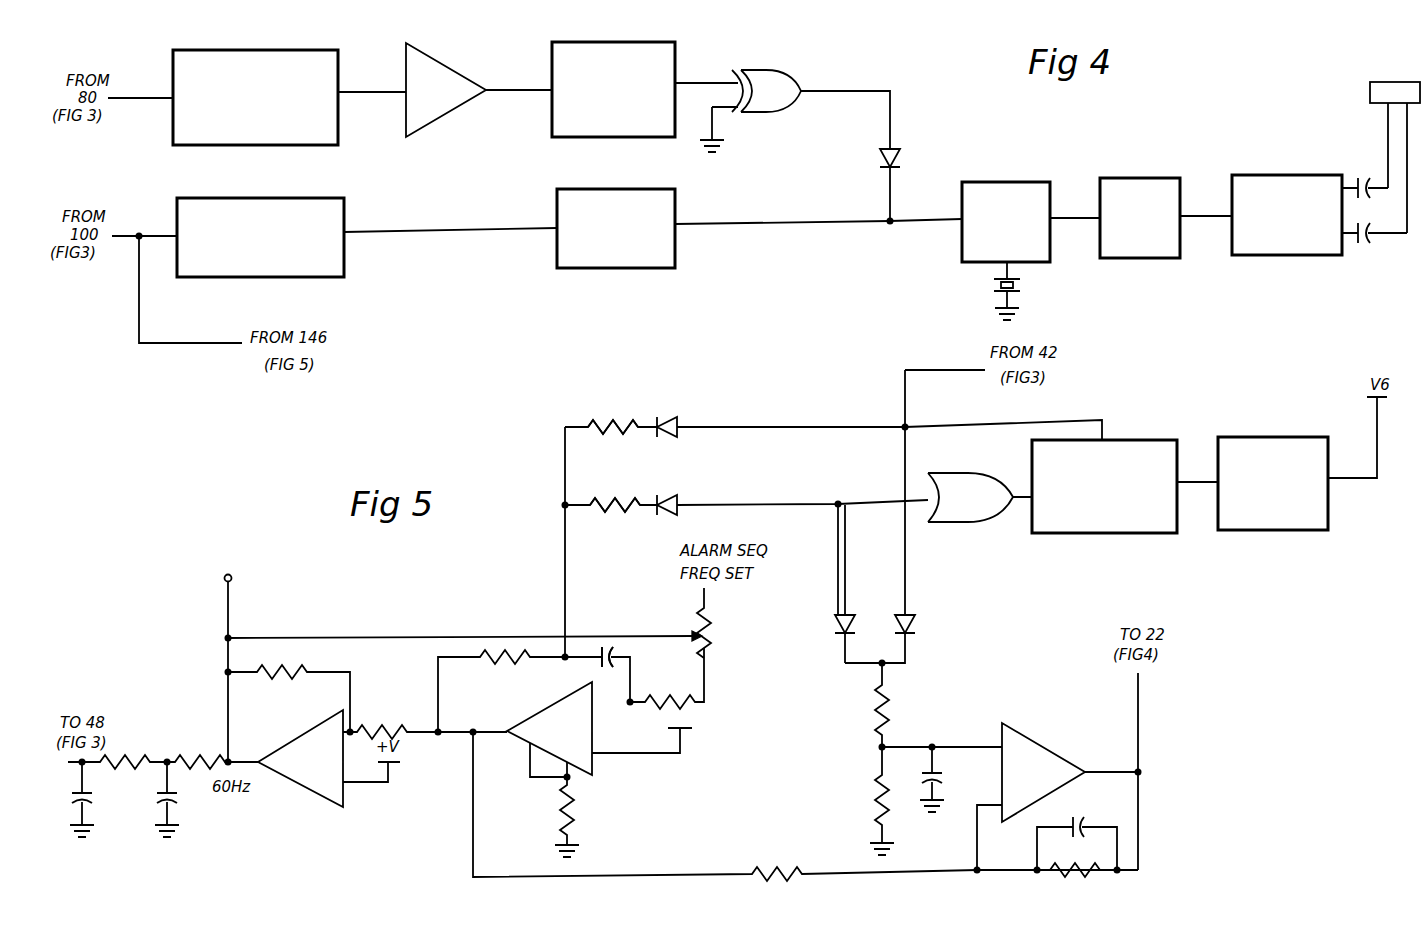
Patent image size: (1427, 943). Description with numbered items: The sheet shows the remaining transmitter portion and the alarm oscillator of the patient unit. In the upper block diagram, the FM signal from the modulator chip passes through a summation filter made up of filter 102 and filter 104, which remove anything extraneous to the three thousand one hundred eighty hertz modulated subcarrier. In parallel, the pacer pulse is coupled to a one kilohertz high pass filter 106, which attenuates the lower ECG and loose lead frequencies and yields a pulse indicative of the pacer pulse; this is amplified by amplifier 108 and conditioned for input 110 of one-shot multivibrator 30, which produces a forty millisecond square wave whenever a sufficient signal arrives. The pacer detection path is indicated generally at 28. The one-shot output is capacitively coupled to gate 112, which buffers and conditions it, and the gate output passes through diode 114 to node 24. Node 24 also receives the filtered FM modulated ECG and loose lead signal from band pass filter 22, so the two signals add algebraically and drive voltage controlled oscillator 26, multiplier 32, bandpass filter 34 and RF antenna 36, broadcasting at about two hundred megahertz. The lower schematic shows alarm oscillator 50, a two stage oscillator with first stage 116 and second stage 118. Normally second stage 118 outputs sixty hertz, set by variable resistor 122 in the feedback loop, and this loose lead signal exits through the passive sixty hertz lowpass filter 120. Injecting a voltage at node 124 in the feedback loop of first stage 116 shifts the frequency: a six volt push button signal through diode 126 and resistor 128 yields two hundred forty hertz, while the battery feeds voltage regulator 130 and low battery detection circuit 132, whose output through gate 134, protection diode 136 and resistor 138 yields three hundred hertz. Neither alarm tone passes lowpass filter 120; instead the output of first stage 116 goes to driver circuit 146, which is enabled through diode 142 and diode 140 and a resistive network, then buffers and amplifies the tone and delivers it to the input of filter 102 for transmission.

In FIG. 4, the high pass filter 106 is at (322, 48).
In FIG. 4, the detector channel 28 is at (392, 52).
In FIG. 4, the amplifier 108 is at (428, 65).
In FIG. 4, the input 110 is at (528, 66).
In FIG. 4, the one-shot multivibrator 30 is at (676, 62).
In FIG. 4, the gate 112 is at (760, 70).
In FIG. 4, the diode 114 is at (902, 162).
In FIG. 4, the summation filter 102 is at (324, 198).
In FIG. 4, the band pass filter 22 is at (470, 212).
In FIG. 4, the summation filter 104 is at (646, 188).
In FIG. 4, the node 24 is at (890, 224).
In FIG. 4, the voltage controlled oscillator 26 is at (1046, 160).
In FIG. 4, the multiplier 32 is at (1160, 158).
In FIG. 4, the bandpass filter 34 is at (1294, 156).
In FIG. 4, the RF antenna 36 is at (1372, 97).
In FIG. 5, the alarm oscillator 50 is at (355, 612).
In FIG. 5, the lowpass filter 120 is at (120, 812).
In FIG. 5, the second stage 118 is at (304, 777).
In FIG. 5, the first stage 116 is at (580, 722).
In FIG. 5, the node 124 is at (568, 660).
In FIG. 5, the variable resistor 122 is at (712, 636).
In FIG. 5, the resistor 128 is at (638, 406).
In FIG. 5, the diode 126 is at (678, 424).
In FIG. 5, the resistor 138 is at (638, 486).
In FIG. 5, the protection diode 136 is at (678, 502).
In FIG. 5, the gate 134 is at (992, 452).
In FIG. 5, the low battery detection circuit 132 is at (1170, 412).
In FIG. 5, the voltage regulator 130 is at (1298, 410).
In FIG. 5, the diode 140 is at (850, 612).
In FIG. 5, the diode 142 is at (915, 612).
In FIG. 5, the driver circuit 146 is at (1076, 743).